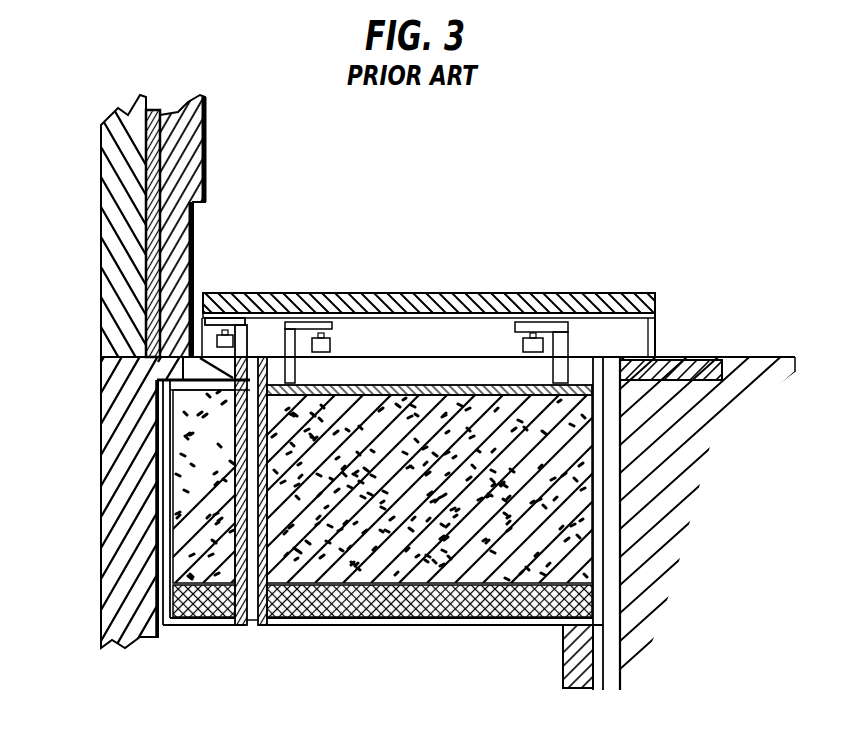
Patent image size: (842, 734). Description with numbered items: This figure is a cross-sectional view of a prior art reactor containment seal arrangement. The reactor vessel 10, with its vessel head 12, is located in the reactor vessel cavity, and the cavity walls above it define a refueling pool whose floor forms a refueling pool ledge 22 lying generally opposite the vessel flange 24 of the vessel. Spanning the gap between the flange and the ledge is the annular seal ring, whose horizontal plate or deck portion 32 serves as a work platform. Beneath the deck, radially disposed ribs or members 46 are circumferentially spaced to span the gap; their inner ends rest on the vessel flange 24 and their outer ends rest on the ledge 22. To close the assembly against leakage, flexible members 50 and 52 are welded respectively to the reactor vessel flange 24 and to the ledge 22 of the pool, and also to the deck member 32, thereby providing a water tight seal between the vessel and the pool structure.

The reactor vessel 10 is at (122, 482).
The vessel head 12 is at (120, 235).
The refueling pool ledge 22 is at (687, 357).
The vessel flange 24 is at (160, 393).
The deck portion 32 is at (356, 292).
The radially disposed rib 46 is at (420, 352).
The flexible member 50 is at (214, 318).
The flexible member 52 is at (652, 325).